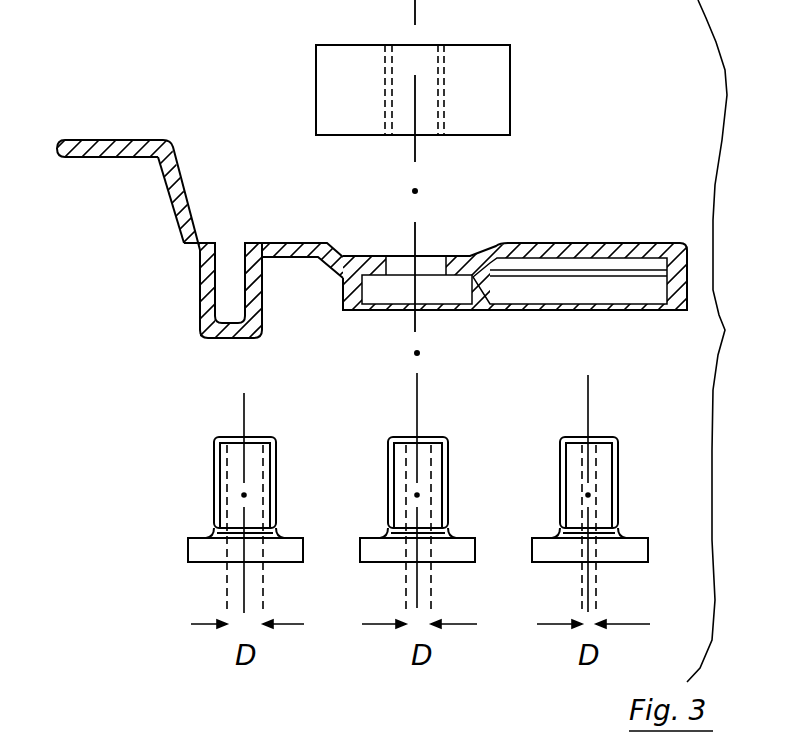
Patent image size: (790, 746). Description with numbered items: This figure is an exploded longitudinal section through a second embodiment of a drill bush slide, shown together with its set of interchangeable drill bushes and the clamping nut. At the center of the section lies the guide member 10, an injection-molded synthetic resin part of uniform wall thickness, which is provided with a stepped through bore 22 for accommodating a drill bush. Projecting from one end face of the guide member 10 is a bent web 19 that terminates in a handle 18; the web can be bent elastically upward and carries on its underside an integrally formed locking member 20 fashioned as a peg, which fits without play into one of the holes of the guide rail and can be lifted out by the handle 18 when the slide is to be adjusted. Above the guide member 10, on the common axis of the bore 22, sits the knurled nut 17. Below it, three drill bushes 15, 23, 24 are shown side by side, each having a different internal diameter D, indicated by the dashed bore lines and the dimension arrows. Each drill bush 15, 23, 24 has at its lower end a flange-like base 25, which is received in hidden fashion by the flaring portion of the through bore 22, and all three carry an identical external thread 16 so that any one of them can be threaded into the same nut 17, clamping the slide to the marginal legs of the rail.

The guide member 10 is at (643, 292).
The drill bush 15 is at (233, 484).
The external thread 16 is at (618, 470).
The knurled nut 17 is at (488, 97).
The handle 18 is at (102, 140).
The bent web 19 is at (290, 242).
The locking member 20 is at (207, 302).
The stepped through bore 22 is at (452, 292).
The drill bush 23 is at (402, 490).
The drill bush 24 is at (602, 507).
The flange-like base 25 is at (565, 553).